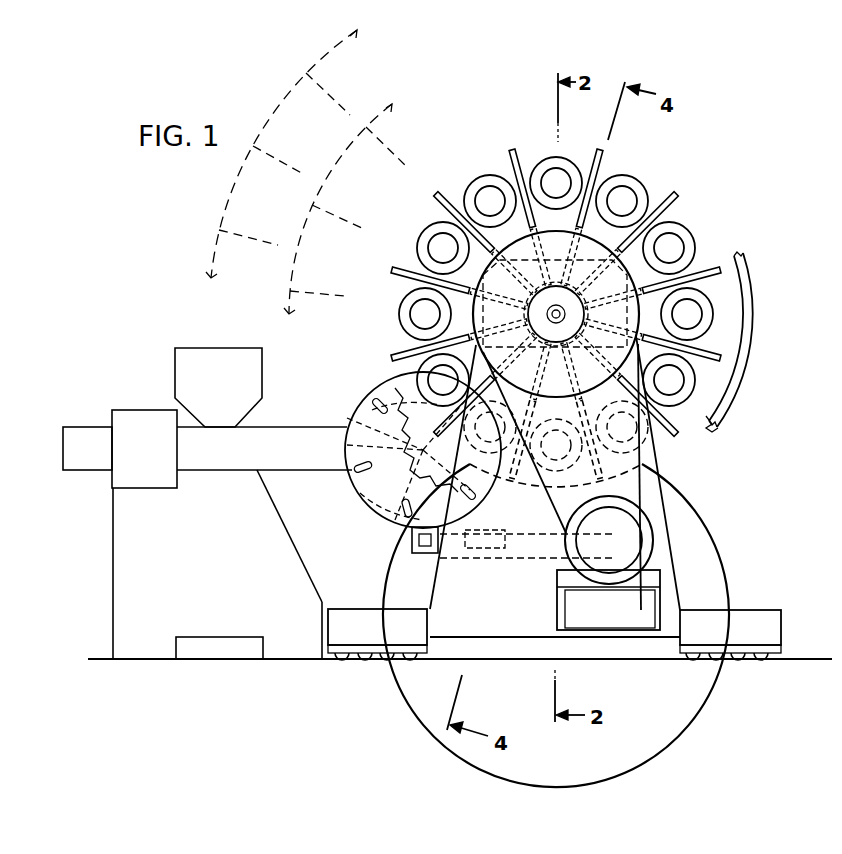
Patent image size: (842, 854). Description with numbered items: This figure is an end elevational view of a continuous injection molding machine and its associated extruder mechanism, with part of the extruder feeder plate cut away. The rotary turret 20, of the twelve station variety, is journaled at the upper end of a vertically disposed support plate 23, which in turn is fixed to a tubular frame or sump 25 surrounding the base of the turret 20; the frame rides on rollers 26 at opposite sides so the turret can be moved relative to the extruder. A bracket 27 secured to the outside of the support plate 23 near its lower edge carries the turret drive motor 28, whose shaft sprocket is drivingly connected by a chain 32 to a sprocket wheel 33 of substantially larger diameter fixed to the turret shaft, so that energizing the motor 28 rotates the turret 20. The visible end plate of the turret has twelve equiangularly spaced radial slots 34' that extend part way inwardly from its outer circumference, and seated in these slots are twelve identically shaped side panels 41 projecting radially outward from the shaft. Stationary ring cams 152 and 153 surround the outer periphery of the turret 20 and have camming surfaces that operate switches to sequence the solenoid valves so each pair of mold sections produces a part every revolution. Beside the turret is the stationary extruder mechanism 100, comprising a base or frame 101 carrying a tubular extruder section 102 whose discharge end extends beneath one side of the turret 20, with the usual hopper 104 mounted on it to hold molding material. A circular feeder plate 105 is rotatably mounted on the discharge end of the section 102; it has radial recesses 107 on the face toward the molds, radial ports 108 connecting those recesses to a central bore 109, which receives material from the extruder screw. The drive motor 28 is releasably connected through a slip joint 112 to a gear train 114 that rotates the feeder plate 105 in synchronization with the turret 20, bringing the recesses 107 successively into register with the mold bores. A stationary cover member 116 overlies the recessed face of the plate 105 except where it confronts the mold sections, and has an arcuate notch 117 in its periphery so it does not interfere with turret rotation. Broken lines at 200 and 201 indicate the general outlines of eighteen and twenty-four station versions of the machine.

The rotary turret 20 is at (740, 168).
The support plate 23 is at (660, 504).
The tubular frame or sump 25 is at (328, 612).
The rollers 26 is at (390, 676).
The bracket 27 is at (654, 534).
The turret drive motor 28 is at (634, 556).
The chain 32 is at (560, 484).
The sprocket wheel 33 is at (744, 293).
The radial slots 34' is at (540, 290).
The side panels 41 is at (436, 182).
The extruder mechanism 100 is at (140, 326).
The base or frame 101 is at (113, 556).
The tubular extruder section 102 is at (76, 427).
The hopper 104 is at (213, 348).
The feeder plate 105 is at (350, 482).
The radial recesses 107 is at (376, 400).
The radial ports 108 is at (378, 500).
The central bore 109 is at (347, 416).
The slip joint 112 is at (490, 564).
The gear train 114 is at (408, 556).
The cover member 116 is at (347, 441).
The arcuate notch 117 is at (347, 374).
The ring cam 152 is at (754, 322).
The ring cam 153 is at (722, 418).
The 18 station machine outline 200 is at (382, 106).
The 24 station machine outline 201 is at (298, 90).